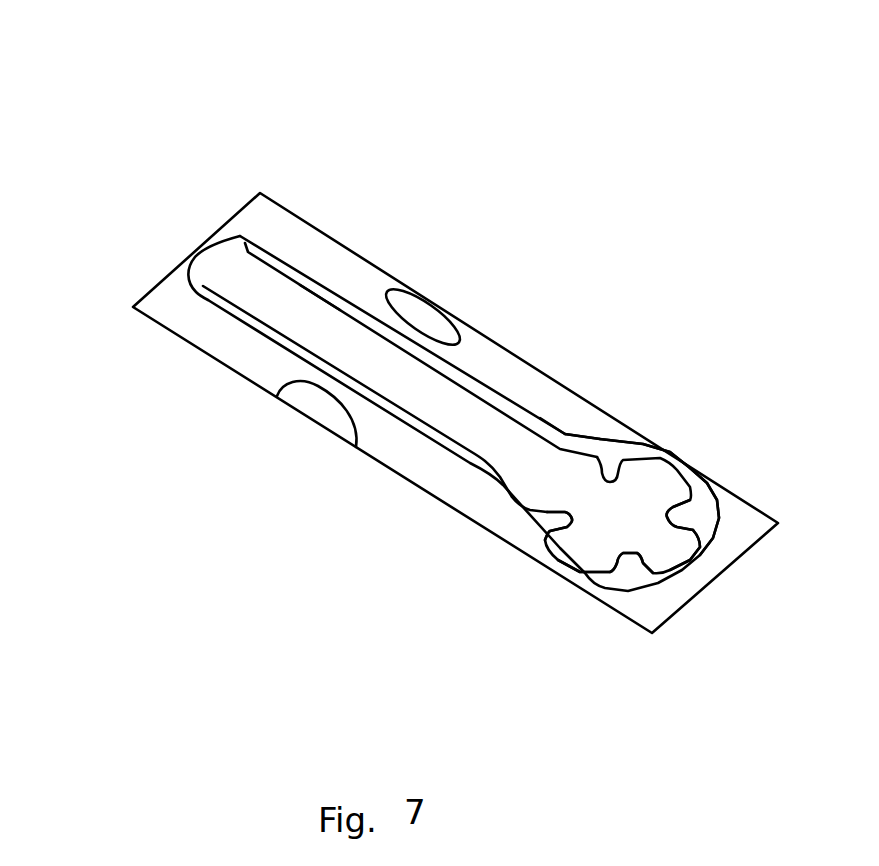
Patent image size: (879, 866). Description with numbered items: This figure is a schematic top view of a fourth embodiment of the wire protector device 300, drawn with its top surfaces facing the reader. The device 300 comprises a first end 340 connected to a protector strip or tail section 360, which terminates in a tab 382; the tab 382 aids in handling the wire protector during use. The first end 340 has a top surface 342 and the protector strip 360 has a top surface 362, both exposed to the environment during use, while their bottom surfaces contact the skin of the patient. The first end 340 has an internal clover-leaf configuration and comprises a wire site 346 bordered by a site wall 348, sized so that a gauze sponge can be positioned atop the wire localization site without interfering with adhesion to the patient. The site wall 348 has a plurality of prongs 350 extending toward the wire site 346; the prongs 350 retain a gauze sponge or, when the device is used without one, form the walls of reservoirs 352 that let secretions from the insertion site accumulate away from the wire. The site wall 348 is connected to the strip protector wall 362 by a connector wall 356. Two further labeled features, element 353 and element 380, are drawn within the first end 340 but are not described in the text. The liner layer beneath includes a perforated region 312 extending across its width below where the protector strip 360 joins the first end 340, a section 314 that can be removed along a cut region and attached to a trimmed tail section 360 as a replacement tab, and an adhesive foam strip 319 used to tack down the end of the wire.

The wire protector device 300 is at (178, 124).
The perforated region 312 is at (500, 510).
The section 314 is at (325, 417).
The adhesive foam strip 319 is at (427, 301).
The first end 340 is at (652, 446).
The top surface 342 is at (710, 503).
The wire site 346 is at (597, 517).
The site wall 348 is at (583, 573).
The prongs 350 is at (628, 563).
The reservoirs 352 is at (655, 547).
The cavity 353 is at (660, 490).
The connector wall 356 is at (577, 443).
The protector strip 360 is at (400, 247).
The top surface 362 is at (217, 298).
The right notch wall 380 is at (703, 565).
The tab 382 is at (230, 244).